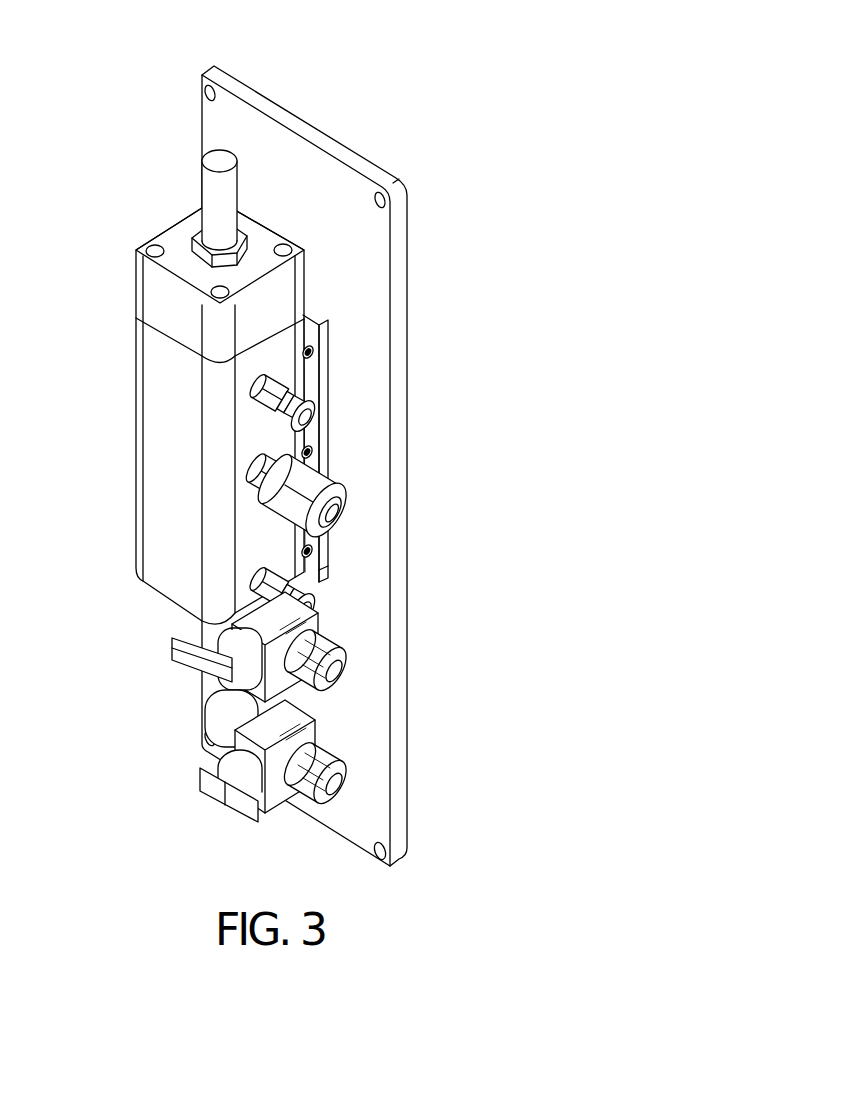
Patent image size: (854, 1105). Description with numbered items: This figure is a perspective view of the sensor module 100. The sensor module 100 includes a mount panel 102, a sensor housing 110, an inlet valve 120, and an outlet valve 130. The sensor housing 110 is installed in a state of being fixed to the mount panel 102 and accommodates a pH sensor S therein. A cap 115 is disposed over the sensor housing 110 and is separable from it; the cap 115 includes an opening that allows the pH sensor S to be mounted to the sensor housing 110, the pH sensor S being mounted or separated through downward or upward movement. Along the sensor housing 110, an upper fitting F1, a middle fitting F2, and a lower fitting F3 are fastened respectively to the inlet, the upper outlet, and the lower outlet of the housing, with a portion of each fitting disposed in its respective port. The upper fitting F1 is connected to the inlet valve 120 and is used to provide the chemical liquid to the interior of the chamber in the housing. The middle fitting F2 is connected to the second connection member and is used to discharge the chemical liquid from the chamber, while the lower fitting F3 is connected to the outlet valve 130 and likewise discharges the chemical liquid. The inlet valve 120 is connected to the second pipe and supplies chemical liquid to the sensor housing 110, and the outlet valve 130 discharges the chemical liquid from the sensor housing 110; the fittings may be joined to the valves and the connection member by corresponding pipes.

The sensor module 100 is at (310, 18).
The mount panel 102 is at (305, 106).
The pH sensor S is at (243, 188).
The sensor housing 110 is at (322, 320).
The cap 115 is at (153, 297).
The upper fitting F1 is at (325, 394).
The middle fitting F2 is at (351, 482).
The lower fitting F3 is at (325, 587).
The inlet valve 120 is at (352, 650).
The outlet valve 130 is at (353, 758).